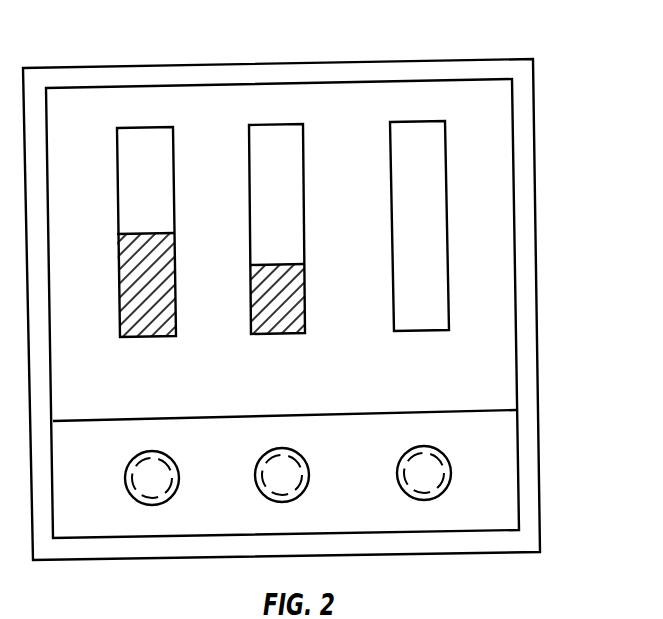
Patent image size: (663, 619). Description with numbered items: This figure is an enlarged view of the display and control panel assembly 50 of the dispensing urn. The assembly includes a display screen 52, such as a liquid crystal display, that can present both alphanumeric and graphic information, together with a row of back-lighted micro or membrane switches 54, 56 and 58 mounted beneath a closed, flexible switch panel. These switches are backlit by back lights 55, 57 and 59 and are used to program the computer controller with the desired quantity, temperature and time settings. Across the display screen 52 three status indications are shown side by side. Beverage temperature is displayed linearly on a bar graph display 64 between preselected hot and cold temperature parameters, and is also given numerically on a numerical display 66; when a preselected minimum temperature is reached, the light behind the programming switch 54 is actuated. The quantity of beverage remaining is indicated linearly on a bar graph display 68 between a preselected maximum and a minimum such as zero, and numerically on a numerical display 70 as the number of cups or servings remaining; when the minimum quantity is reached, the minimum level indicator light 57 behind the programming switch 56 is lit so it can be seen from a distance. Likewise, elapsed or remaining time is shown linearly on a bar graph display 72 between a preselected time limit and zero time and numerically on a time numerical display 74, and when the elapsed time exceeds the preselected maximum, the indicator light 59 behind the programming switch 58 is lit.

The display and control panel assembly 50 is at (535, 150).
The display screen 52 is at (383, 90).
The micro or membrane switch 54 is at (125, 480).
The back light 55 is at (153, 452).
The micro or membrane switch 56 is at (256, 478).
The minimum level indicator light 57 is at (283, 448).
The micro or membrane switch 58 is at (398, 476).
The indicator light 59 is at (425, 446).
The bar graph display 64 is at (118, 252).
The numerical display 66 is at (118, 383).
The bar graph display 68 is at (249, 197).
The numerical display 70 is at (265, 384).
The bar graph display 72 is at (444, 187).
The time numerical display 74 is at (452, 375).